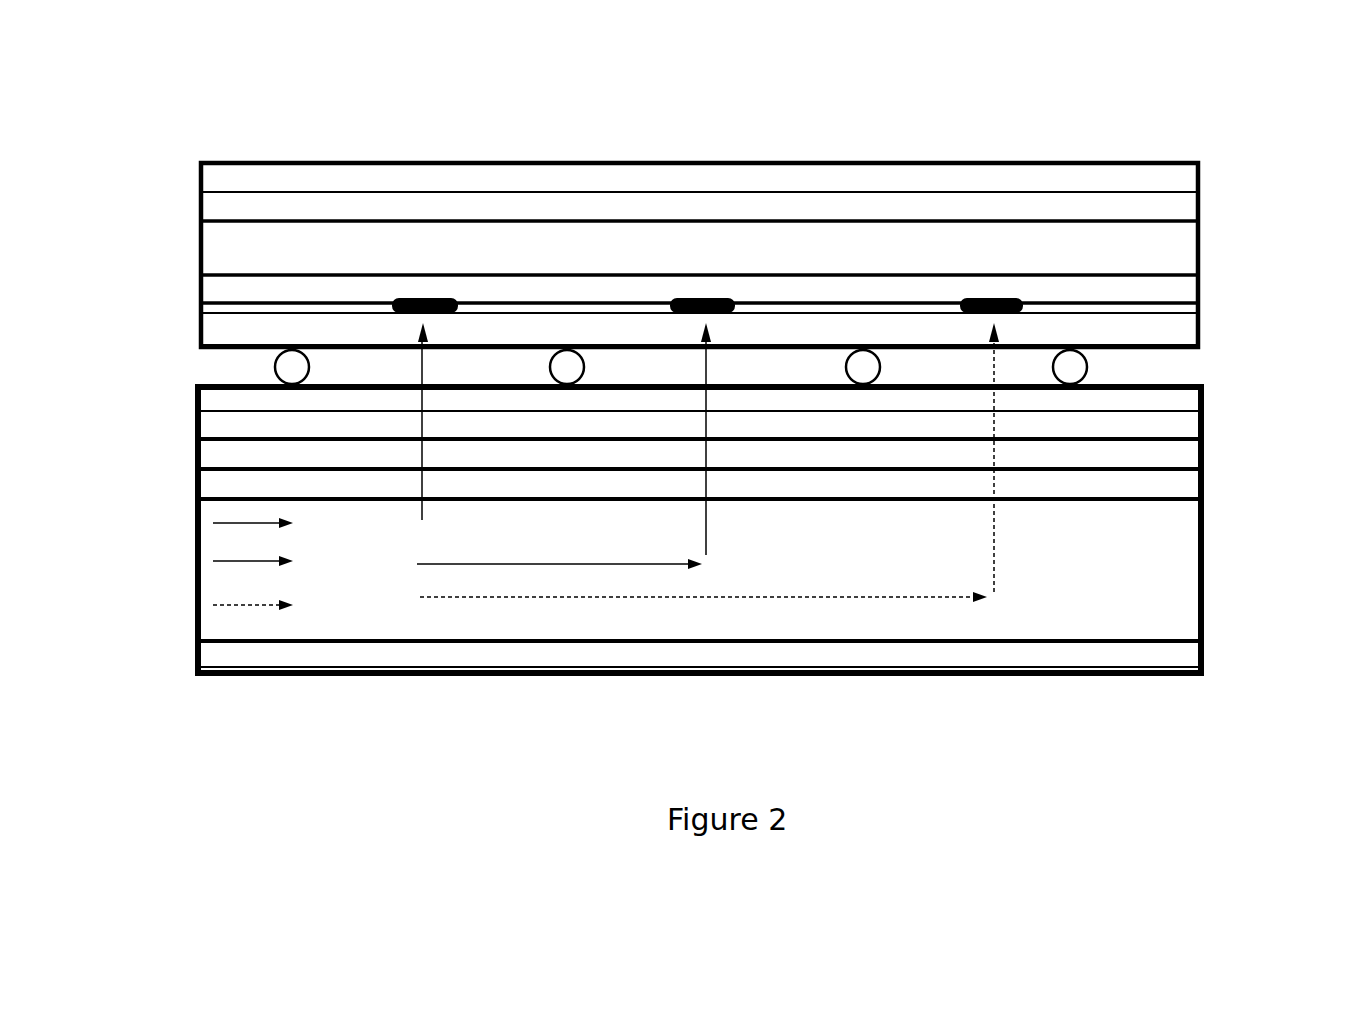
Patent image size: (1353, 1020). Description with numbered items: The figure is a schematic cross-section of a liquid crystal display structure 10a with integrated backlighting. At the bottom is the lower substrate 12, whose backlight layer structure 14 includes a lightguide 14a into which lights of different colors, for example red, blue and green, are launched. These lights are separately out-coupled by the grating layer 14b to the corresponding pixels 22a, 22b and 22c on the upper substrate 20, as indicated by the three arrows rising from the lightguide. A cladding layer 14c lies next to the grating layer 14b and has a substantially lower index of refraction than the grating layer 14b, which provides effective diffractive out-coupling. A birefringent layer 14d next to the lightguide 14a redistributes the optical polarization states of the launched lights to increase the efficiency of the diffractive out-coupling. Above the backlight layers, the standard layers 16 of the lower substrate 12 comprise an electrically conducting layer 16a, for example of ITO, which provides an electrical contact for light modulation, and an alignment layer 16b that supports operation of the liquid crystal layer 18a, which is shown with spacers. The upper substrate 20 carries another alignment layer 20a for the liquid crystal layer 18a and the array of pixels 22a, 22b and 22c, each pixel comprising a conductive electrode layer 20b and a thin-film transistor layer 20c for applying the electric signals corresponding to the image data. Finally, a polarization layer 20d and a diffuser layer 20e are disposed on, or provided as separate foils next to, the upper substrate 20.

The liquid crystal display structure 10a is at (826, 122).
The lower substrate 12 is at (107, 383).
The backlight layer structure 14 is at (187, 457).
The lightguide 14a is at (1172, 580).
The grating layer 14b is at (1172, 485).
The cladding layer 14c is at (1177, 453).
The birefringent layer 14d is at (1177, 655).
The standard layers 16 is at (187, 388).
The electrically conducting layer 16a is at (1180, 423).
The alignment layer 16b is at (1172, 398).
The liquid crystal layer 18a is at (1187, 359).
The upper substrate 20 is at (185, 172).
The alignment layer 20a is at (1178, 303).
The conductive electrode layer 20b is at (1183, 335).
The thin-film transistor layer 20c is at (1163, 283).
The polarization layer 20d is at (1180, 207).
The diffuser layer 20e is at (1157, 182).
The pixel 22a is at (428, 298).
The pixel 22b is at (697, 298).
The pixel 22c is at (1005, 298).